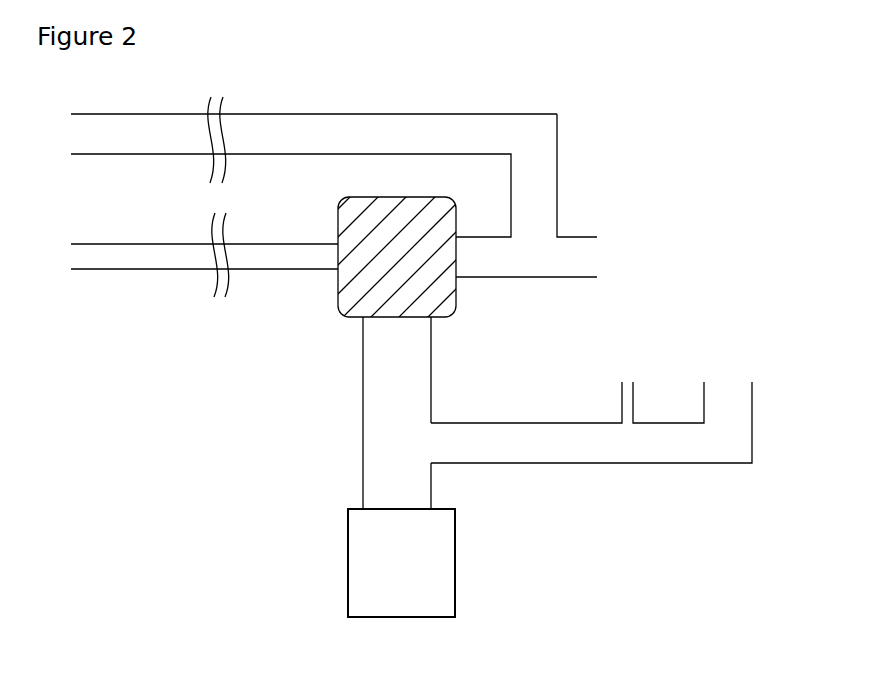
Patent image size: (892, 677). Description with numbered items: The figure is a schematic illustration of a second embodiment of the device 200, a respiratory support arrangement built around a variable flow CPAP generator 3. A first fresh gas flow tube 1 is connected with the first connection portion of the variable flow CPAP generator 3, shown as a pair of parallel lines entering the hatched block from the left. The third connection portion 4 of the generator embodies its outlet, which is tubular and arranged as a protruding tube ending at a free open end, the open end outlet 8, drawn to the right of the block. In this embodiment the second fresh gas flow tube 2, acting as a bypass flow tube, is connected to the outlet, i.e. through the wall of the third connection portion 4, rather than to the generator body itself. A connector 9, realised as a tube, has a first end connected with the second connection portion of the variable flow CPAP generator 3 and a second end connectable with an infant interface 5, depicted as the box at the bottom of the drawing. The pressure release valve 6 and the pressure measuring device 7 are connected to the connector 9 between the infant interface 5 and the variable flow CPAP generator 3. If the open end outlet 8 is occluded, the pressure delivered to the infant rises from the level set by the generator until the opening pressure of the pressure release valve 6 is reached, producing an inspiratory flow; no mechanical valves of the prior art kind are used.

The device 200 is at (646, 139).
The first fresh gas flow tube 1 is at (152, 253).
The second fresh gas flow tube 2 is at (150, 135).
The variable flow CPAP generator 3 is at (358, 290).
The third connection portion 4 is at (487, 250).
The infant interface 5 is at (422, 571).
The pressure release valve 6 is at (728, 395).
The pressure measuring device 7 is at (630, 392).
The open end outlet 8 is at (597, 255).
The connector 9 is at (390, 442).